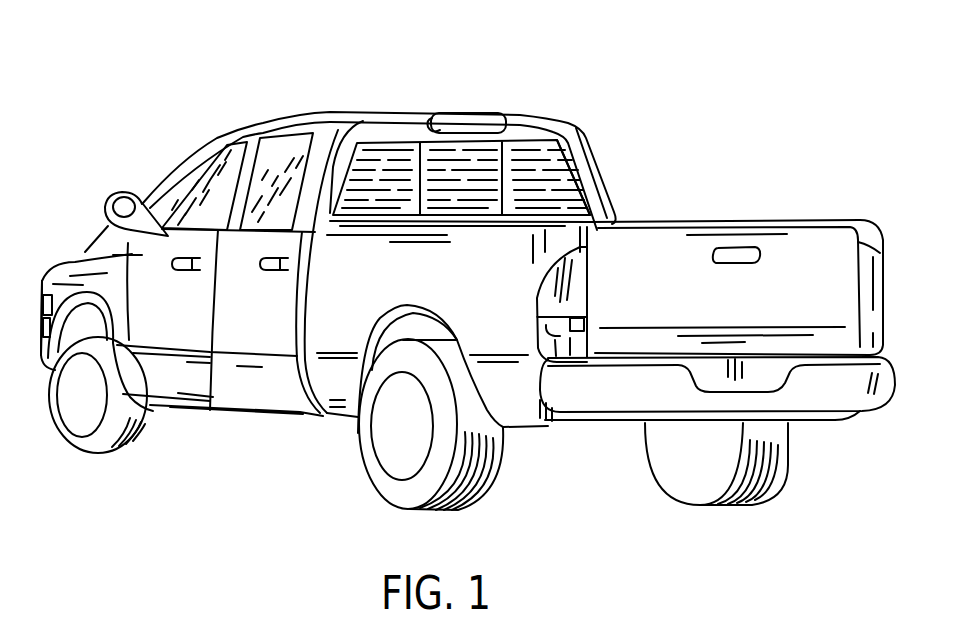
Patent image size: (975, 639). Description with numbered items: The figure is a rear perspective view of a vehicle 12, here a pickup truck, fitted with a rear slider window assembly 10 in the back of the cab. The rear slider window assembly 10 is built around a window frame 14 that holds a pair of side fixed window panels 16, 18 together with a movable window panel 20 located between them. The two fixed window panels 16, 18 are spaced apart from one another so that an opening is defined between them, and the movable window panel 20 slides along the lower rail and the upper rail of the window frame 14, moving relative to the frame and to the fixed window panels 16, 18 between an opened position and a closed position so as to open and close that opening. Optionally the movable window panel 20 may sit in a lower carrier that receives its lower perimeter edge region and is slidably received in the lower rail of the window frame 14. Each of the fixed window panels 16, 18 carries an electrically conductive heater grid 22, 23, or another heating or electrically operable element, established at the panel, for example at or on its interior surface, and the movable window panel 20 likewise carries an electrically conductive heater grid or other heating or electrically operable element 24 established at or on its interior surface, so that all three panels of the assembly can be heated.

The rear slider window assembly 10 is at (561, 189).
The vehicle 12 is at (237, 90).
The window frame 14 is at (397, 132).
The side fixed window panel 16 is at (355, 156).
The side fixed window panel 18 is at (547, 163).
The movable window panel 20 is at (467, 145).
The heater grid 22 is at (378, 200).
The heater grid 23 is at (534, 163).
The heater grid 24 is at (451, 154).